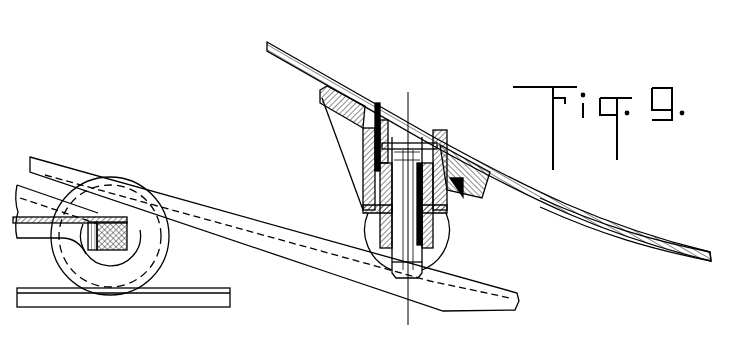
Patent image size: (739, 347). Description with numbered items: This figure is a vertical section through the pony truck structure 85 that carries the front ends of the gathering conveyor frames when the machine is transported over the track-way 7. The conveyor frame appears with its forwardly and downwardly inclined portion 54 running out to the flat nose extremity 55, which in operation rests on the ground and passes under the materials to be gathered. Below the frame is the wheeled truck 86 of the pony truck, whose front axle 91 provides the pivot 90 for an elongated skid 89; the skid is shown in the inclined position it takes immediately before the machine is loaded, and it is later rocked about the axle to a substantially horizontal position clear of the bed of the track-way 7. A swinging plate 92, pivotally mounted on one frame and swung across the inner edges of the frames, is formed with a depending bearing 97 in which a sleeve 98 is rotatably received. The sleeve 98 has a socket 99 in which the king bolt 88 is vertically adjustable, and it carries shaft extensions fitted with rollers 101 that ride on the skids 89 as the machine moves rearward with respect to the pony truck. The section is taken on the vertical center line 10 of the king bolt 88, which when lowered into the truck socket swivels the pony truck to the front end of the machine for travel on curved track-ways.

The track-way 7 is at (198, 302).
The center line of clamping bolt 10 is at (418, 211).
The forwardly and downwardly inclined portion 54 is at (272, 50).
The nose extremity 55 is at (708, 248).
The pony truck structure 85 is at (274, 234).
The wheeled truck 86 is at (37, 233).
The king bolt 88 is at (440, 233).
The skid 89 is at (293, 243).
The pivot 90 is at (115, 262).
The front axle 91 is at (128, 249).
The swinging plate 92 is at (472, 172).
The depending bearing 97 is at (363, 172).
The sleeve 98 is at (365, 206).
The socket 99 is at (388, 252).
The roller 101 is at (440, 262).